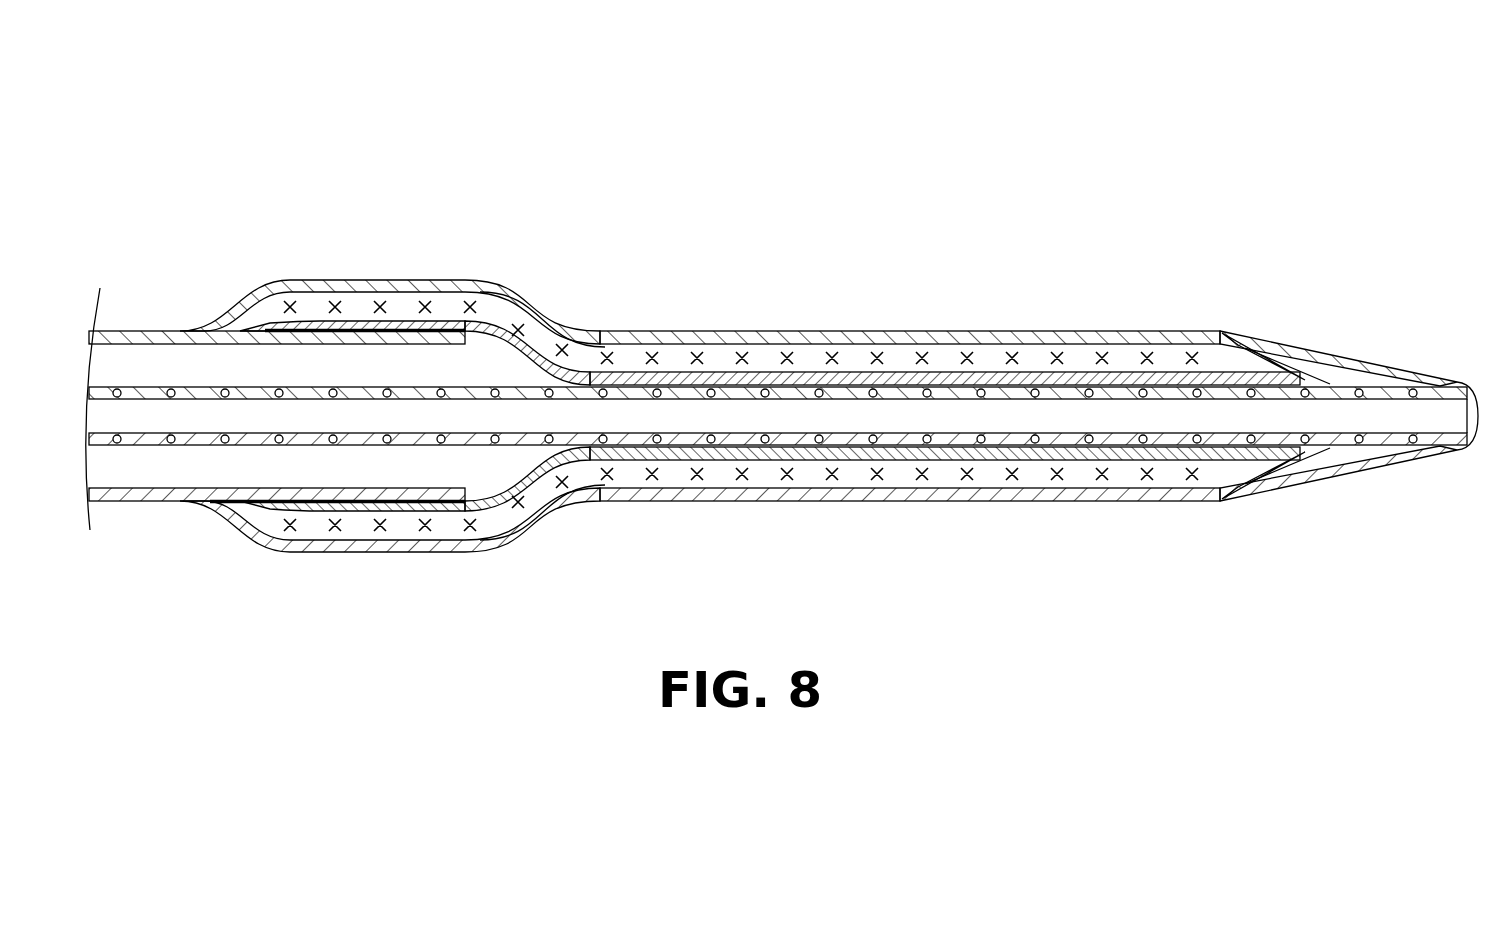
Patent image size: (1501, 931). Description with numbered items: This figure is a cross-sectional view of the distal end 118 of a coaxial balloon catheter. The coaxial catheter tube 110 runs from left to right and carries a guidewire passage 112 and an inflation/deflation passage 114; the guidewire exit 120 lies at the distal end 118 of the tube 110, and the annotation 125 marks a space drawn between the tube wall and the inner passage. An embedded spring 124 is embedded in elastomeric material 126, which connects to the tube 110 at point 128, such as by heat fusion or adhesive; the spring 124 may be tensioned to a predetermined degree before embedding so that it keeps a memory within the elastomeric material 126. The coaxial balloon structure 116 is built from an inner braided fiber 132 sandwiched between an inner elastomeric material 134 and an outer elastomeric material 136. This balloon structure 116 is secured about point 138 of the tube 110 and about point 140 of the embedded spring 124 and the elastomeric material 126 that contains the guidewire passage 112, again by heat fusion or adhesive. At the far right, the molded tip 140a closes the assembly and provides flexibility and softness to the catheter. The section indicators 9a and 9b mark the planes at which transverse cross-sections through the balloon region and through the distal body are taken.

The coaxial catheter tube 110 is at (130, 392).
The guidewire passage 112 is at (122, 425).
The inflation/deflation passage 114 is at (160, 352).
The balloon structure 116 is at (823, 185).
The distal end 118 is at (1263, 126).
The guidewire exit 120 is at (1470, 413).
The embedded spring 124 is at (712, 392).
The lumen space 125 is at (153, 368).
The elastomeric material 126 is at (807, 390).
The point 128 is at (95, 397).
The inner braided fiber 132 is at (633, 362).
The inner elastomeric material 134 is at (1090, 370).
The outer elastomeric material 136 is at (1167, 333).
The point 138 is at (440, 330).
The point 140 is at (1353, 363).
The molded tip 140a is at (1413, 372).
The section line 9a is at (1067, 307).
The section line 9b is at (407, 260).